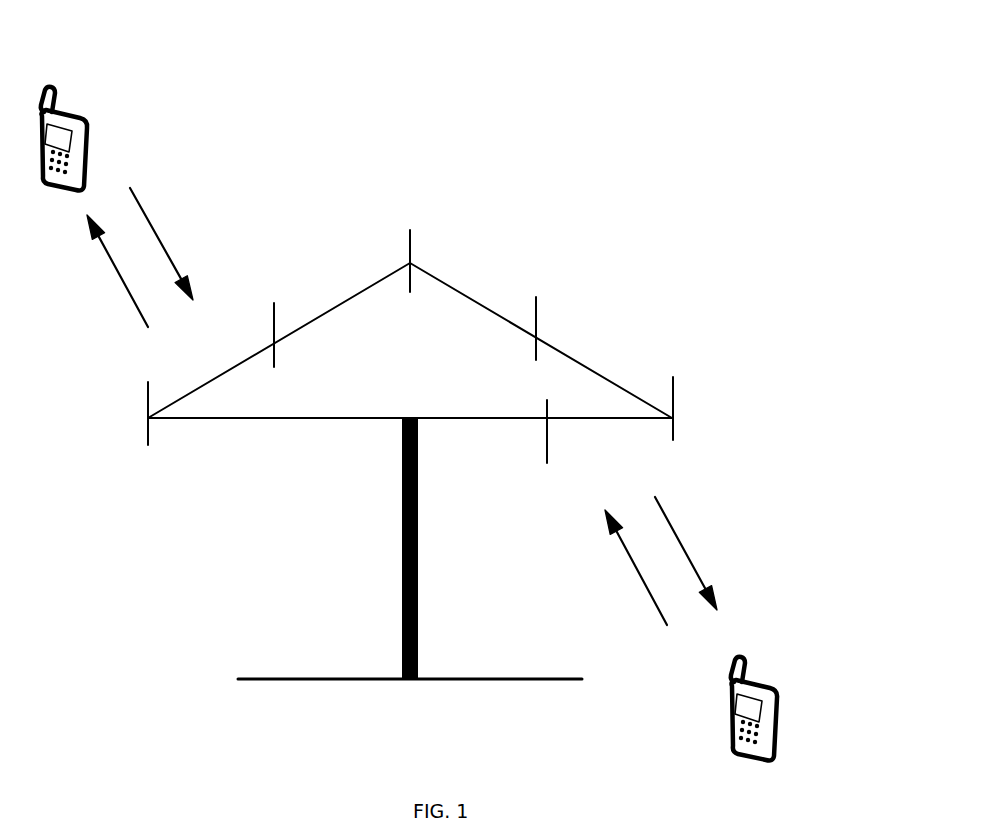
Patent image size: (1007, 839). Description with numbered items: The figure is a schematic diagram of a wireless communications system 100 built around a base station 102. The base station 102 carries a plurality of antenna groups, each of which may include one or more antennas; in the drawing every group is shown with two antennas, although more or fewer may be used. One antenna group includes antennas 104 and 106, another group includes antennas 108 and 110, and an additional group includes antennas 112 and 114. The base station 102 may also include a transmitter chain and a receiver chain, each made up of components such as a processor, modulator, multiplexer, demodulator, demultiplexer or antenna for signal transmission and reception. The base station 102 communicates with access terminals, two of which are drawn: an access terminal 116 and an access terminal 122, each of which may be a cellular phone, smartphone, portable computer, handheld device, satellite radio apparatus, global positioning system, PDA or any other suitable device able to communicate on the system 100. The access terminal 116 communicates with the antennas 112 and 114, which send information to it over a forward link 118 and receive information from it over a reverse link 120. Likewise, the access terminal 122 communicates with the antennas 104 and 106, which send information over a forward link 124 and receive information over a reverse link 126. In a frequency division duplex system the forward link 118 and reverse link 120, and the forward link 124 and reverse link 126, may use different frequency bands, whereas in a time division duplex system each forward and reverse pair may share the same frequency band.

The wireless communications system 100 is at (619, 94).
The base station 102 is at (418, 602).
The antenna 104 is at (149, 427).
The antenna 106 is at (275, 353).
The antenna 108 is at (411, 245).
The antenna 110 is at (537, 315).
The antenna 112 is at (674, 393).
The antenna 114 is at (548, 448).
The access terminal 116 is at (776, 693).
The forward link 118 is at (673, 528).
The reverse link 120 is at (652, 598).
The access terminal 122 is at (86, 120).
The forward link 124 is at (122, 283).
The reverse link 126 is at (147, 218).